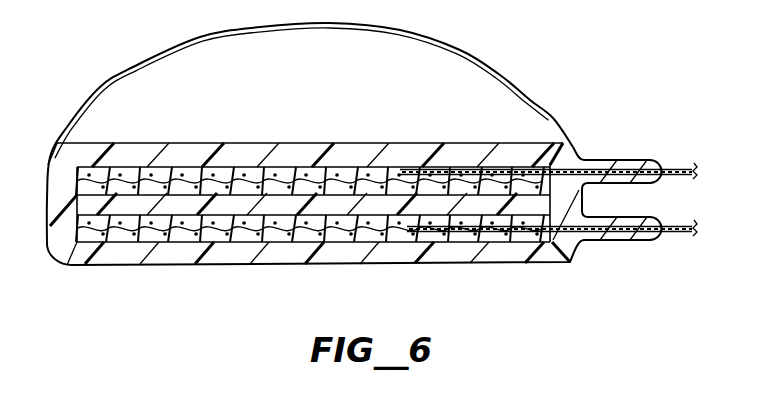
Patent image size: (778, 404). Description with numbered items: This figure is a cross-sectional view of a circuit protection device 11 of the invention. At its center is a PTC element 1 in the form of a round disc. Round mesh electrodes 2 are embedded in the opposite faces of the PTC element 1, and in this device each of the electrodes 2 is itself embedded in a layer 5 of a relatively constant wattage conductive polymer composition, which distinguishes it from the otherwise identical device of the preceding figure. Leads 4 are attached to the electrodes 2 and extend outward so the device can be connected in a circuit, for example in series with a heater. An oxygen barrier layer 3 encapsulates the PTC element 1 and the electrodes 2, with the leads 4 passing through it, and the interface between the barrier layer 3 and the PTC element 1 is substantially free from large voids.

The circuit protection device 11 is at (99, 86).
The PTC element 1 is at (188, 202).
The mesh electrodes 2 is at (364, 173).
The oxygen barrier layer 3 is at (167, 258).
The leads 4 is at (682, 168).
The layer of relatively constant wattage conductive polymer composition 5 is at (308, 169).